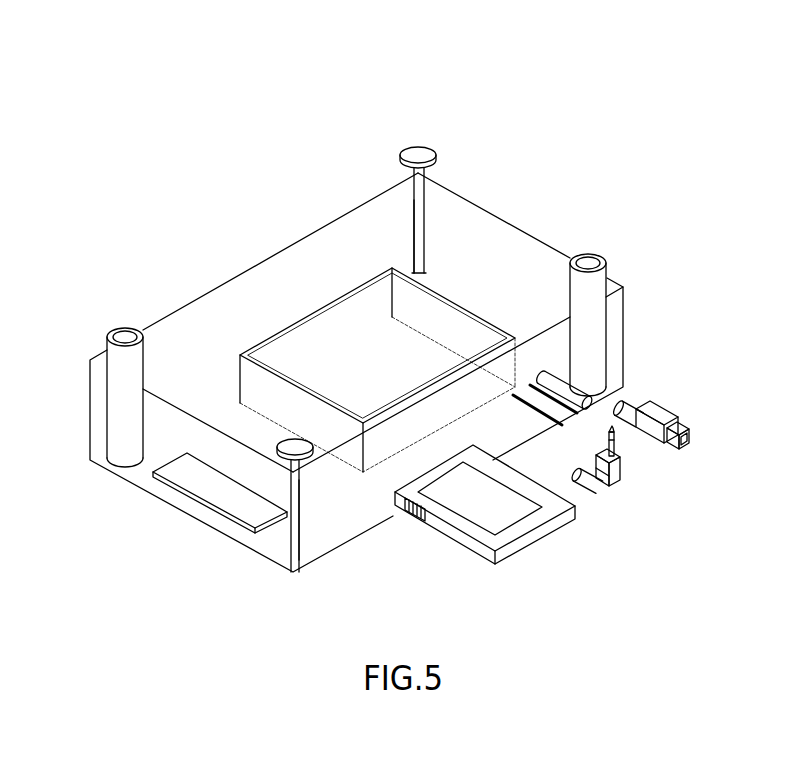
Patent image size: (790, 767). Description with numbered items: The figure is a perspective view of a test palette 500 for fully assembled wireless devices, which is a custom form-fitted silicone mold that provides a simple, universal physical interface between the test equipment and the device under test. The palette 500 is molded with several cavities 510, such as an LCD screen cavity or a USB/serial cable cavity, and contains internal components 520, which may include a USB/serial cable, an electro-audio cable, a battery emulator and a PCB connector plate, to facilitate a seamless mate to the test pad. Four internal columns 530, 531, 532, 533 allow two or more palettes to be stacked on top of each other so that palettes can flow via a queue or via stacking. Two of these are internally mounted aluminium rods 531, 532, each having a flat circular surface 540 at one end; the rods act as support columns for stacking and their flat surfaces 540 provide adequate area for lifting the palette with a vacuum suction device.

The test palette 500 is at (435, 46).
The cavities 510 is at (365, 363).
The internal components 520 is at (595, 500).
The internal column 530 is at (113, 355).
The aluminium rod 531 is at (412, 220).
The aluminium rod 532 is at (593, 288).
The internal column 533 is at (300, 520).
The flat circular surface 540 is at (418, 152).